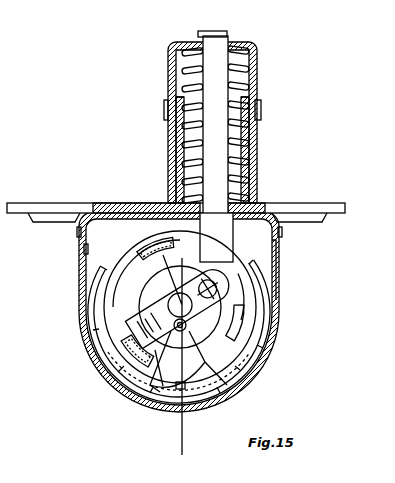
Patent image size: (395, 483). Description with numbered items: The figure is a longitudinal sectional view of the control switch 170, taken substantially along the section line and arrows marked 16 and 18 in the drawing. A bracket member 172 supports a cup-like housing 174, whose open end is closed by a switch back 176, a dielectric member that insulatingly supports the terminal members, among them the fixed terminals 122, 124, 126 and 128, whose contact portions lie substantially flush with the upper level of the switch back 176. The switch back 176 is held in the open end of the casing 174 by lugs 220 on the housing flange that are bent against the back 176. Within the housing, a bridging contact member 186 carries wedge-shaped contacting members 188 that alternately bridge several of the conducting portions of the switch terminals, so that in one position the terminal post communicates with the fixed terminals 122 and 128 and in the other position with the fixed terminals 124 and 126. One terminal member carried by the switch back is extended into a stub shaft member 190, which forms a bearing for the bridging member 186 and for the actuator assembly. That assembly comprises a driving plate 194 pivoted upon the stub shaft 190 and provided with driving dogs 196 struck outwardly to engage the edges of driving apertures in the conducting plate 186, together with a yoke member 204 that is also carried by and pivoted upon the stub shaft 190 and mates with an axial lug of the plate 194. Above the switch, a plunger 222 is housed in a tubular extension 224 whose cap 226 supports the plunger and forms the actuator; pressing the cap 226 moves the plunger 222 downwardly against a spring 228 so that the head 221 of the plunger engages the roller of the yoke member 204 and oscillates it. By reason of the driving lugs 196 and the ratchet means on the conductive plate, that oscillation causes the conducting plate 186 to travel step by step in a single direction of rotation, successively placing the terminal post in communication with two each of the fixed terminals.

The control switch 170 is at (142, 83).
The cap 226 is at (256, 95).
The tubular extension 224 is at (246, 131).
The plunger 222 is at (219, 170).
The spring 228 is at (190, 128).
The bracket member 172 is at (278, 204).
The switch back 176 is at (96, 228).
The section line 16- 16 is at (158, 185).
The cup-like housing 174 is at (273, 250).
The head of plunger 221 is at (279, 258).
The view arrows 18 is at (261, 258).
The terminal member 128 is at (157, 229).
The lugs 220 is at (84, 249).
The driving dogs 196 is at (112, 268).
The driving plate 194 is at (155, 288).
The terminal member 124 is at (104, 310).
The terminal member 122 is at (267, 305).
The wedge-shaped contacting members 188 is at (257, 323).
The bridging contact member 186 is at (228, 352).
The stub shaft member 190 is at (172, 343).
The yoke member 204 is at (163, 386).
The terminal member 126 is at (211, 410).